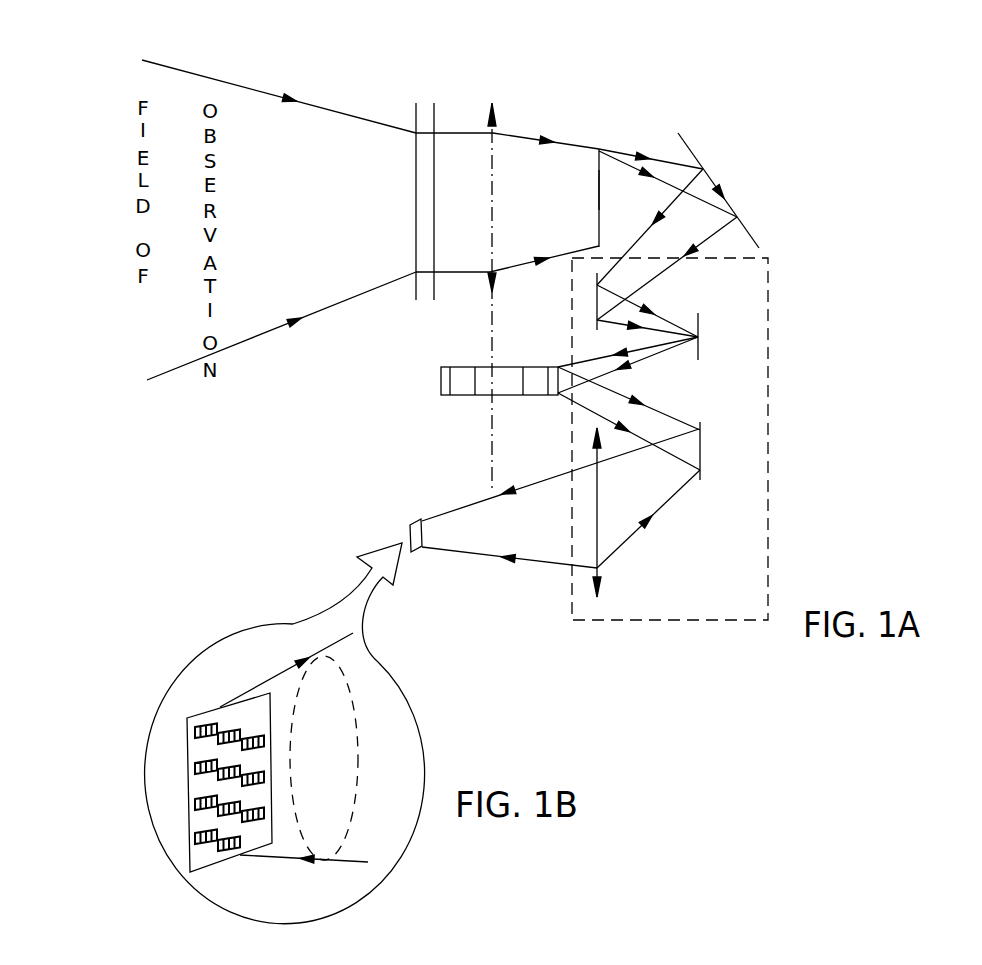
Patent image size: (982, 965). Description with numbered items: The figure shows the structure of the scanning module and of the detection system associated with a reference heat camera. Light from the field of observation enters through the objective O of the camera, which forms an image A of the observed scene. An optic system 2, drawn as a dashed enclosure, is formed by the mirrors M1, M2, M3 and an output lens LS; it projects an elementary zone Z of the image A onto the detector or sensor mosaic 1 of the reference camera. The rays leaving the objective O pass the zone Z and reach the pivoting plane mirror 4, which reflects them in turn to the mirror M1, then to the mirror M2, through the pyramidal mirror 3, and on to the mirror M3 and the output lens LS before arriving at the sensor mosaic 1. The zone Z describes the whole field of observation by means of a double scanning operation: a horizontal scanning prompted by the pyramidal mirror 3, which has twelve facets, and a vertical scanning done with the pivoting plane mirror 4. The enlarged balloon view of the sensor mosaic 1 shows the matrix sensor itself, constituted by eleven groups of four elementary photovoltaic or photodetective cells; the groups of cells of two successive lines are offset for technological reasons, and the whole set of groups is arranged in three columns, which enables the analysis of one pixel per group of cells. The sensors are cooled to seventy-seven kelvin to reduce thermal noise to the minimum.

The sensor mosaic 1 is at (412, 520).
The optic system 2 is at (768, 257).
The pyramidal mirror 3 is at (508, 367).
The pivoting plane mirror 4 is at (692, 151).
The objective O is at (490, 281).
The zone Z is at (599, 149).
The image A is at (599, 188).
The mirror M1 is at (567, 301).
The mirror M2 is at (700, 337).
The mirror M3 is at (700, 460).
The output lens LS is at (593, 525).